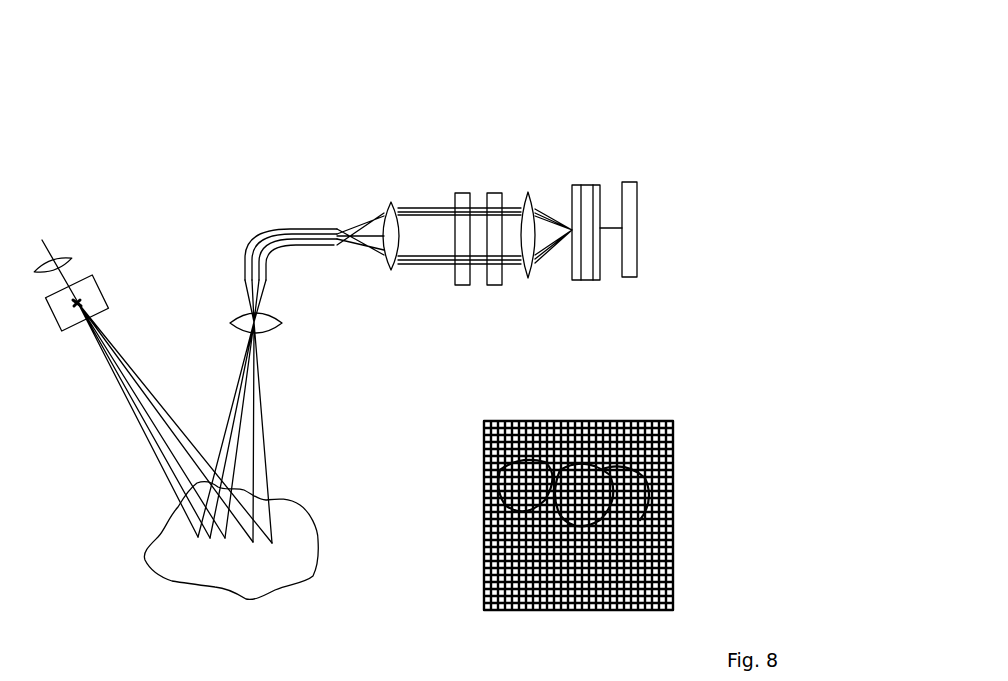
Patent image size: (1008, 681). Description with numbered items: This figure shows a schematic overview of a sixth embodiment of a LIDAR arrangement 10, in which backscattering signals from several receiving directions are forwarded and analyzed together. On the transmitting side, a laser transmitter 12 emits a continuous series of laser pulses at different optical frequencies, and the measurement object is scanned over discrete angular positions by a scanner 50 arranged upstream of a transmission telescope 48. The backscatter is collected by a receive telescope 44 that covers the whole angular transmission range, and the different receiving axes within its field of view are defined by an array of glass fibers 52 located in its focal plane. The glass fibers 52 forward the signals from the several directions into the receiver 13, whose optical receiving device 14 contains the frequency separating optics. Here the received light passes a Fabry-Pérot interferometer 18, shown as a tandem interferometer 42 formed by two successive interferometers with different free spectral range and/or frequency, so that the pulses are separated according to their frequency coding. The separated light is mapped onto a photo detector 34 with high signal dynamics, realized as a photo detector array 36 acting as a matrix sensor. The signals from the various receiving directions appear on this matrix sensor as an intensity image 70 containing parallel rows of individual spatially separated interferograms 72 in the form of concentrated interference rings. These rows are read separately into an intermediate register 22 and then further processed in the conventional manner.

The LIDAR arrangement 10 is at (205, 92).
The laser transmitter 12 is at (78, 182).
The receiver 13 is at (348, 118).
The optical receiving device 14 is at (445, 150).
The interferometer 18 is at (461, 195).
The intermediate register 22 is at (635, 197).
The photo detector 34 is at (598, 192).
The photo detector array 36 is at (593, 172).
The tandem interferometer 42 is at (493, 80).
The receive telescope 44 is at (275, 330).
The transmission telescope 48 is at (72, 258).
The scanner 50 is at (100, 290).
The glass fibers 52 is at (298, 253).
The intensity image of the reception signals on the matrix sensor 70 is at (665, 422).
The interferograms 72 is at (487, 530).